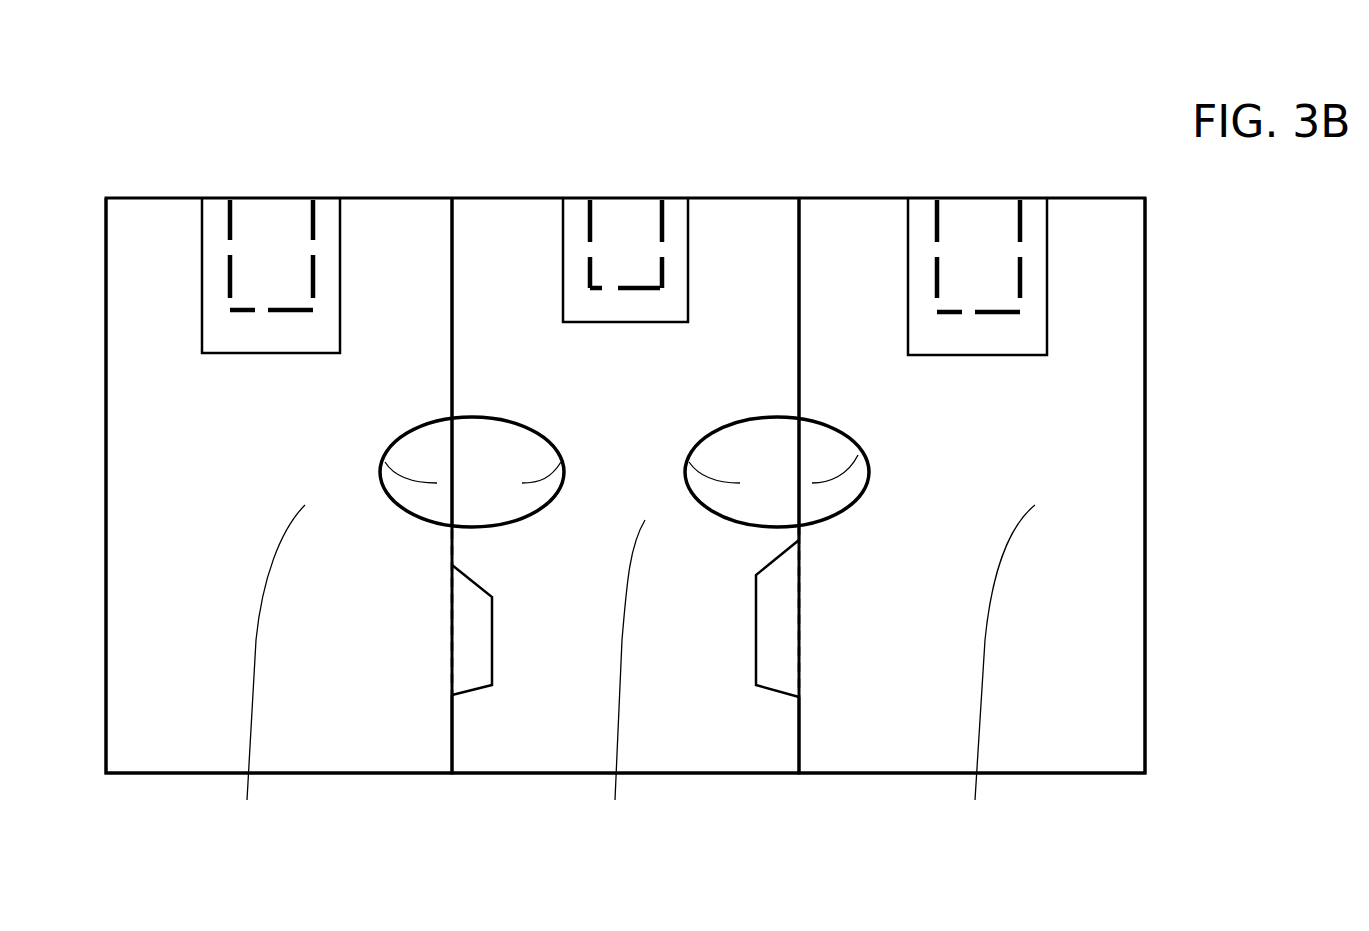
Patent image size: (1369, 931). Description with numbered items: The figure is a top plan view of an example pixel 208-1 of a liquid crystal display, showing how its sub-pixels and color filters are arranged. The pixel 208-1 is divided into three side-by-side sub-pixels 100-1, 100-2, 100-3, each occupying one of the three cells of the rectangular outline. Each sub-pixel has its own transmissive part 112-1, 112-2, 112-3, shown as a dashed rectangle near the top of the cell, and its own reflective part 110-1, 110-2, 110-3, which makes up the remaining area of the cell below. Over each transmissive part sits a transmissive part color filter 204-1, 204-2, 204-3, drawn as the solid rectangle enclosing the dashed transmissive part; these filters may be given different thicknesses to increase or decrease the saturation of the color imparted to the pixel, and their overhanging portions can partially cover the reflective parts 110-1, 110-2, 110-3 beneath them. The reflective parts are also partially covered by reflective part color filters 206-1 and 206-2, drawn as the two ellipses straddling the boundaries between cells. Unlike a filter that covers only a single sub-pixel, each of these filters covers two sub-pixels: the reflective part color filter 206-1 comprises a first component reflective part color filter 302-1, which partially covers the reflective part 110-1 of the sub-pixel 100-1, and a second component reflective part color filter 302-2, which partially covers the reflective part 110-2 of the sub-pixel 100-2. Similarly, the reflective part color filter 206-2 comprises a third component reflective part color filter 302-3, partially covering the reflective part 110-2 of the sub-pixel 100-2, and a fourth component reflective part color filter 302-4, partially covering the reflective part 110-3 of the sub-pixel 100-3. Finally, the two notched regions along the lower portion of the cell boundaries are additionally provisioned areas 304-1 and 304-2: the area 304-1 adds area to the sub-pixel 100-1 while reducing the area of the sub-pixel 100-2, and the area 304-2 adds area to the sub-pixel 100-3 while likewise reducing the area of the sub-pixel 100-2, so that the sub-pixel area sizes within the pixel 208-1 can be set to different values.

The pixel 208-1 is at (172, 121).
The sub-pixel 100-1 is at (192, 743).
The sub-pixel 100-2 is at (540, 743).
The sub-pixel 100-3 is at (888, 743).
The transmissive part color filter 204-1 is at (256, 330).
The transmissive part color filter 204-2 is at (590, 303).
The transmissive part color filter 204-3 is at (950, 331).
The transmissive part 112-1 is at (258, 219).
The transmissive part 112-2 is at (618, 232).
The transmissive part 112-3 is at (965, 220).
The reflective part color filter 206-1 is at (480, 455).
The reflective part color filter 206-2 is at (783, 468).
The first component reflective part color filter 302-1 is at (385, 462).
The second component reflective part color filter 302-2 is at (561, 462).
The third component reflective part color filter 302-3 is at (689, 462).
The fourth component reflective part color filter 302-4 is at (858, 455).
The area 304-1 is at (466, 621).
The area 304-2 is at (785, 620).
The reflective part 110-1 is at (263, 674).
The reflective part 110-2 is at (621, 682).
The reflective part 110-3 is at (983, 674).